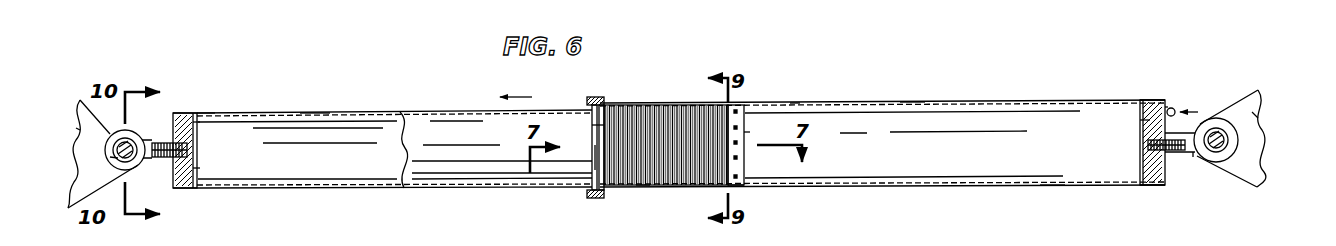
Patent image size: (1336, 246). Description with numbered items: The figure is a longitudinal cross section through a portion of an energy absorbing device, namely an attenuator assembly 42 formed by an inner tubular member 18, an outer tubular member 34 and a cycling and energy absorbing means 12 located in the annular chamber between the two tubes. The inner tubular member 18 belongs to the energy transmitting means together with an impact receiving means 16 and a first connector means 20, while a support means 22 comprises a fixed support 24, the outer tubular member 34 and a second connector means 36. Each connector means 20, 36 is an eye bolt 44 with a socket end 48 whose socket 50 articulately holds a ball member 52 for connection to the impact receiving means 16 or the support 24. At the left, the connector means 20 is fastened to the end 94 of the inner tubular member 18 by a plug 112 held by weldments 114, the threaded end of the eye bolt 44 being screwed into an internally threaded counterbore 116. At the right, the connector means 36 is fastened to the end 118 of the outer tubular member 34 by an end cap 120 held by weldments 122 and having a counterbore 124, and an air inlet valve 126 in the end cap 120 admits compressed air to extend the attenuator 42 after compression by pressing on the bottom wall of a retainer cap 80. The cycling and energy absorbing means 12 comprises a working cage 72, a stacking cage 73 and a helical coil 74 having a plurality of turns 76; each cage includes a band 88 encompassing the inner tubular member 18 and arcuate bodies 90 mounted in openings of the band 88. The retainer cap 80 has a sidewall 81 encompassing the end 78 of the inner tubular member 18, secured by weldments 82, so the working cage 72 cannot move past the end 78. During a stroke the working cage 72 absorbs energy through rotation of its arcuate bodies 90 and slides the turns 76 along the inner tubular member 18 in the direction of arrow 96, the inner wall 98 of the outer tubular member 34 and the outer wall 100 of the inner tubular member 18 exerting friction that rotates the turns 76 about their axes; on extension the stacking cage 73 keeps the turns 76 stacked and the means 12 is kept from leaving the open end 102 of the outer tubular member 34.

The cycling and energy absorbing means 12 is at (668, 200).
The impact receiving means 16 is at (66, 158).
The inner tubular member 18 is at (374, 106).
The first connector means 20 is at (138, 104).
The support means 22 is at (1237, 192).
The fixed support 24 is at (1253, 115).
The outer tubular member 34 is at (1052, 190).
The second connector means 36 is at (1192, 162).
The attenuator assembly 42 is at (856, 86).
The eye bolt 44 is at (1195, 130).
The socket end 48 is at (80, 130).
The socket 50 is at (128, 146).
The ball member 52 is at (115, 157).
The working cage 72 is at (748, 110).
The stacking cage 73 is at (591, 126).
The helical coil 74 is at (646, 106).
The turns 76 is at (646, 190).
The end of the inner tubular member 78 is at (738, 187).
The retainer cap 80 is at (745, 132).
The sidewall 81 is at (796, 103).
The weldments 82 is at (730, 164).
The band 88 is at (604, 198).
The arcuate bodies 90 is at (594, 167).
The end of the inner tubular member 94 is at (198, 113).
The arrow 96 is at (516, 94).
The inner wall of the outer tubular member 98 is at (914, 102).
The outer wall of the inner tubular member 100 is at (313, 112).
The open end of the outer tubular member 102 is at (591, 100).
The plug 112 is at (202, 168).
The weldments 114 is at (186, 112).
The internally threaded counterbore 116 is at (200, 128).
The end of the outer tubular member 118 is at (1167, 106).
The end cap 120 is at (1142, 157).
The weldments 122 is at (1156, 100).
The internally threaded counterbore 124 is at (1142, 120).
The air inlet valve 126 is at (1175, 108).